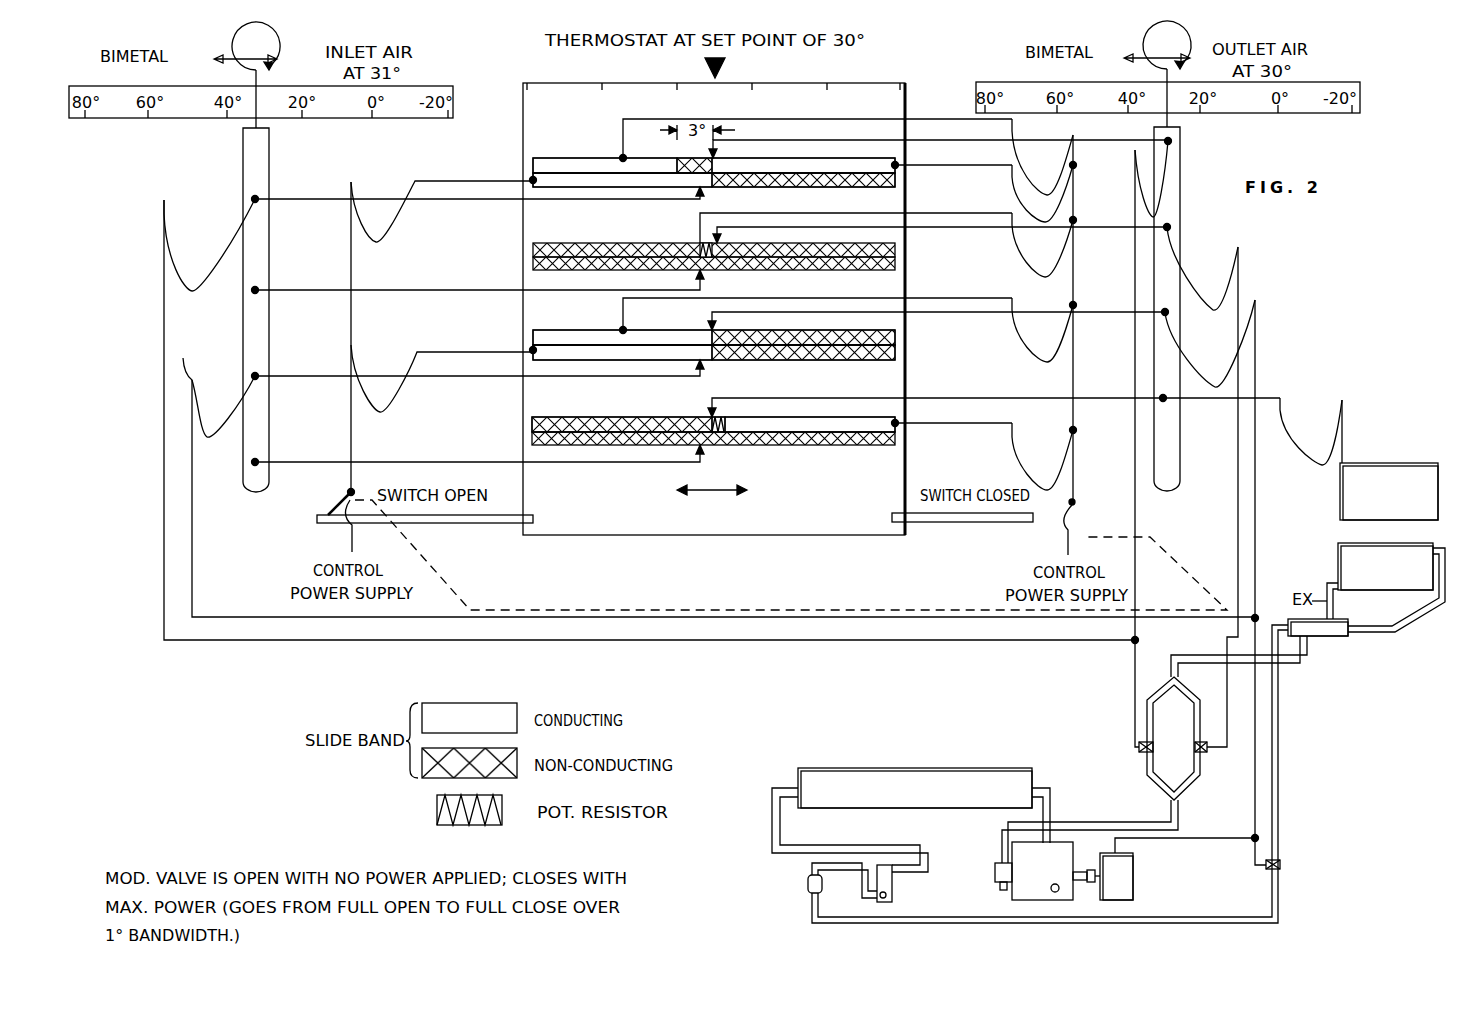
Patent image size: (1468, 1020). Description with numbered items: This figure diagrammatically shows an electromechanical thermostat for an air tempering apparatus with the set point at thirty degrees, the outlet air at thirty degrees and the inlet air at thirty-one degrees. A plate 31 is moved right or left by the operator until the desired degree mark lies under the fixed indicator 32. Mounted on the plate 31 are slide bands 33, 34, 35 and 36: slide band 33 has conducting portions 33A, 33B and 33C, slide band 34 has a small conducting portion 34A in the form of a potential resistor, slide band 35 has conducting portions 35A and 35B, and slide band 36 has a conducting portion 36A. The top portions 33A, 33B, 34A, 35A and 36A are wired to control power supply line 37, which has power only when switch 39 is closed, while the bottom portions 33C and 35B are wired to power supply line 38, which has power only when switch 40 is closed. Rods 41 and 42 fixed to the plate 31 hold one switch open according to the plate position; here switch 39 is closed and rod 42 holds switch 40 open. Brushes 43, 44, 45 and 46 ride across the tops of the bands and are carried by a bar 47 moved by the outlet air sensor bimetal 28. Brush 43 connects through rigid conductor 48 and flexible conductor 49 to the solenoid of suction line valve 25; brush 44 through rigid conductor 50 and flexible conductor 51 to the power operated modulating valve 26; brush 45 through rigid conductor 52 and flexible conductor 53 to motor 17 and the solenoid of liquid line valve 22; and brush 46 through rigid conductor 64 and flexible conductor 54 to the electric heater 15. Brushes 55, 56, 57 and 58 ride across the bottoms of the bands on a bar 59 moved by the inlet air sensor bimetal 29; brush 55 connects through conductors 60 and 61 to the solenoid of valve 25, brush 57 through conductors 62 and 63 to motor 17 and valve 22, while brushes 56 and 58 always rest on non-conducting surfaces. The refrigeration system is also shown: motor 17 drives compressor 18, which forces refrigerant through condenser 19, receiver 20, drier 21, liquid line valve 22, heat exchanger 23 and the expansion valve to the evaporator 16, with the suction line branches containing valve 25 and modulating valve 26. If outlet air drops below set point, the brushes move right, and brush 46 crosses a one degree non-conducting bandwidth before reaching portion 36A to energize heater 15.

The electric heater 15 is at (1391, 463).
The evaporator 16 is at (1355, 578).
The motor 17 is at (1179, 868).
The compressor 18 is at (1068, 866).
The condenser 19 is at (915, 788).
The receiver 20 is at (886, 879).
The drier 21 is at (810, 886).
The solenoid operated liquid line valve 22 is at (1280, 866).
The heat exchanger 23 is at (1330, 639).
The solenoid operated suction line valve 25 is at (1137, 747).
The power operated modulating valve 26 is at (1207, 752).
The outlet air sensor bimetal 28 is at (1144, 46).
The inlet air sensor bimetal 29 is at (232, 46).
The plate 31 is at (710, 523).
The fixed indicator 32 is at (722, 66).
The slide band 33 is at (540, 146).
The conducting portion 33A is at (586, 165).
The conducting portion 33B is at (798, 165).
The conducting portion 33C is at (615, 180).
The slide band 34 is at (540, 230).
The conducting portion 34A is at (698, 240).
The slide band 35 is at (540, 318).
The conducting portion 35A is at (598, 341).
The conducting portion 35B is at (643, 348).
The slide band 36 is at (540, 404).
The conducting portion 36A is at (806, 420).
The control power supply line 37 is at (1074, 473).
The power supply line 38 is at (352, 436).
The switch 39 is at (1084, 530).
The switch 40 is at (345, 494).
The rod 41 is at (957, 522).
The rod 42 is at (410, 522).
The brush 43 is at (718, 148).
The brush 44 is at (721, 236).
The brush 45 is at (710, 328).
The brush 46 is at (708, 412).
The bar 47 is at (1180, 177).
The rigid conductor 48 is at (1083, 145).
The flexible conductor 49 is at (1135, 172).
The rigid conductor 50 is at (1088, 228).
The flexible conductor 51 is at (1240, 254).
The rigid conductor 52 is at (1090, 316).
The flexible conductor 53 is at (1258, 314).
The flexible conductor 54 is at (1343, 422).
The brush 55 is at (703, 190).
The brush 56 is at (705, 274).
The brush 57 is at (705, 365).
The brush 58 is at (703, 452).
The bar 59 is at (255, 172).
The rigid conductor 60 is at (287, 200).
The flexible conductor 61 is at (164, 235).
The rigid conductor 62 is at (293, 375).
The flexible conductor 63 is at (719, 479).
The rigid conductor 64 is at (1090, 398).